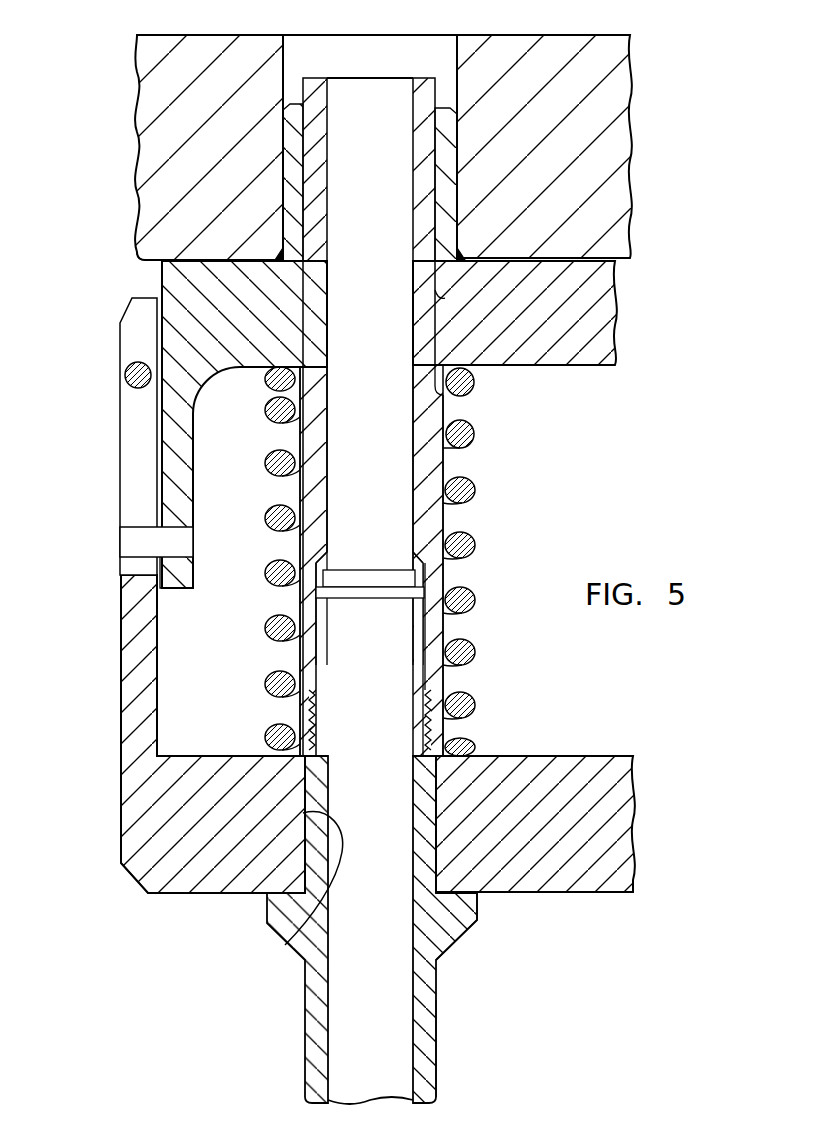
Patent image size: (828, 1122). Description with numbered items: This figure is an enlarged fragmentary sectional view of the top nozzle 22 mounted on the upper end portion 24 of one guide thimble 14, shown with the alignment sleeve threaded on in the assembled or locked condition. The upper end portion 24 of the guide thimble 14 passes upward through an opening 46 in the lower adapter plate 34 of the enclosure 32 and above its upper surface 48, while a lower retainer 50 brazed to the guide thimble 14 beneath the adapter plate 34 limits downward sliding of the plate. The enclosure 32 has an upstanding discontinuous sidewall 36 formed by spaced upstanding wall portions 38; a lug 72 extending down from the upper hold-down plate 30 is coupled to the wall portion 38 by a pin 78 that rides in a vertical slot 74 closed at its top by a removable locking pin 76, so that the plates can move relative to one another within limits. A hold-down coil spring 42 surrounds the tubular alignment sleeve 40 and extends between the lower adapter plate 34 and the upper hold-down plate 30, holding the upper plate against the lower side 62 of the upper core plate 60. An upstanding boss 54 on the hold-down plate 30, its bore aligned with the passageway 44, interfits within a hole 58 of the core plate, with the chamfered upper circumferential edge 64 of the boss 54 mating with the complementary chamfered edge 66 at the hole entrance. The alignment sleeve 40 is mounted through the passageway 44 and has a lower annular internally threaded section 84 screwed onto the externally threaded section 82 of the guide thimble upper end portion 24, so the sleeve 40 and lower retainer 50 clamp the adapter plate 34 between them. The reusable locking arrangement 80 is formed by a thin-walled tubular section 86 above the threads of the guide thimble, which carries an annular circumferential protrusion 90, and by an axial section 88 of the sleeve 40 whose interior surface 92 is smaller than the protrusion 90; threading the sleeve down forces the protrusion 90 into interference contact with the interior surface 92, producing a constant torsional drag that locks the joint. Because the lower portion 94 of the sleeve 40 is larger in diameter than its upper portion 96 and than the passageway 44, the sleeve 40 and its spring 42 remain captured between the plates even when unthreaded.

The guide thimble 14 is at (444, 1053).
The top nozzle 22 is at (166, 595).
The upper end portion 24 is at (392, 930).
The upper hold-down plate 30 is at (620, 310).
The enclosure 32 is at (120, 792).
The lower adapter plate 34 is at (628, 818).
The discontinuous sidewall 36 is at (121, 656).
The upstanding wall portion 38 is at (121, 686).
The tubular alignment sleeve 40 is at (450, 518).
The hold-down coil spring 42 is at (476, 433).
The passageway 44 is at (440, 300).
The opening 46 is at (285, 938).
The upper surface 48 is at (568, 755).
The lower retainer 50 is at (482, 905).
The upstanding boss 54 is at (458, 155).
The hole 58 is at (451, 90).
The upper core plate 60 is at (633, 74).
The lower side 62 is at (142, 264).
The upper circumferential edge 64 is at (291, 104).
The chamfered edge 66 is at (305, 270).
The lug 72 is at (172, 470).
The vertical slot 74 is at (160, 590).
The removable locking pin 76 is at (102, 387).
The pin 78 is at (130, 537).
The reusable locking arrangement 80 is at (347, 560).
The externally threaded section 82 is at (422, 722).
The internally threaded section 84 is at (466, 692).
The thin-walled tubular section 86 is at (408, 608).
The axial section 88 is at (305, 612).
The annular circumferential protrusion 90 is at (440, 584).
The interior surface 92 is at (325, 620).
The lower portion 94 is at (470, 627).
The upper portion 96 is at (430, 355).